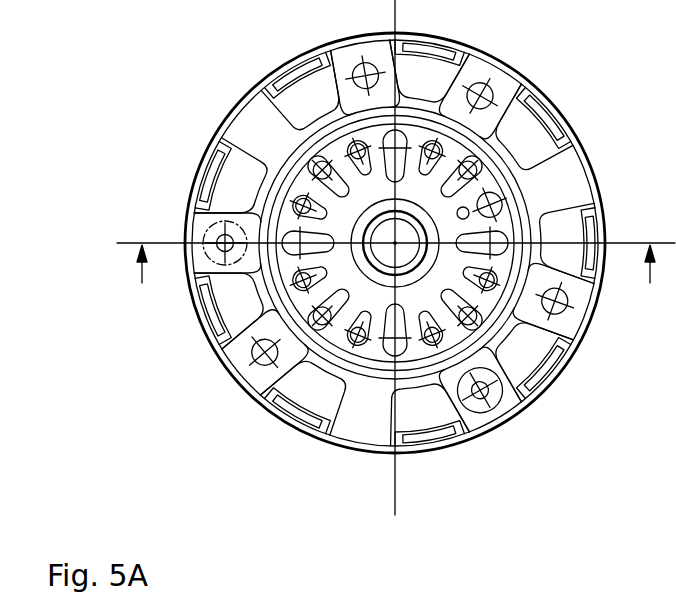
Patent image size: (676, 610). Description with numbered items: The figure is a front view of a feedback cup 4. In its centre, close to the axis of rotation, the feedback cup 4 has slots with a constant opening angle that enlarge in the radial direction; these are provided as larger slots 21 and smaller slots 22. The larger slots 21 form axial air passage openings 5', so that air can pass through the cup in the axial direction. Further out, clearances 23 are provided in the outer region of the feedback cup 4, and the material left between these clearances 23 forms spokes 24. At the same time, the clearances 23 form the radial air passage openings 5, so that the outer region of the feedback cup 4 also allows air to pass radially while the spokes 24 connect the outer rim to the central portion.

The feedback cup 4 is at (253, 128).
The radial air passage openings 5 is at (213, 175).
The axial air passage openings 5' is at (217, 303).
The larger slots 21 is at (332, 303).
The smaller slots 22 is at (363, 342).
The clearances 23 is at (320, 398).
The spokes 24 is at (375, 417).